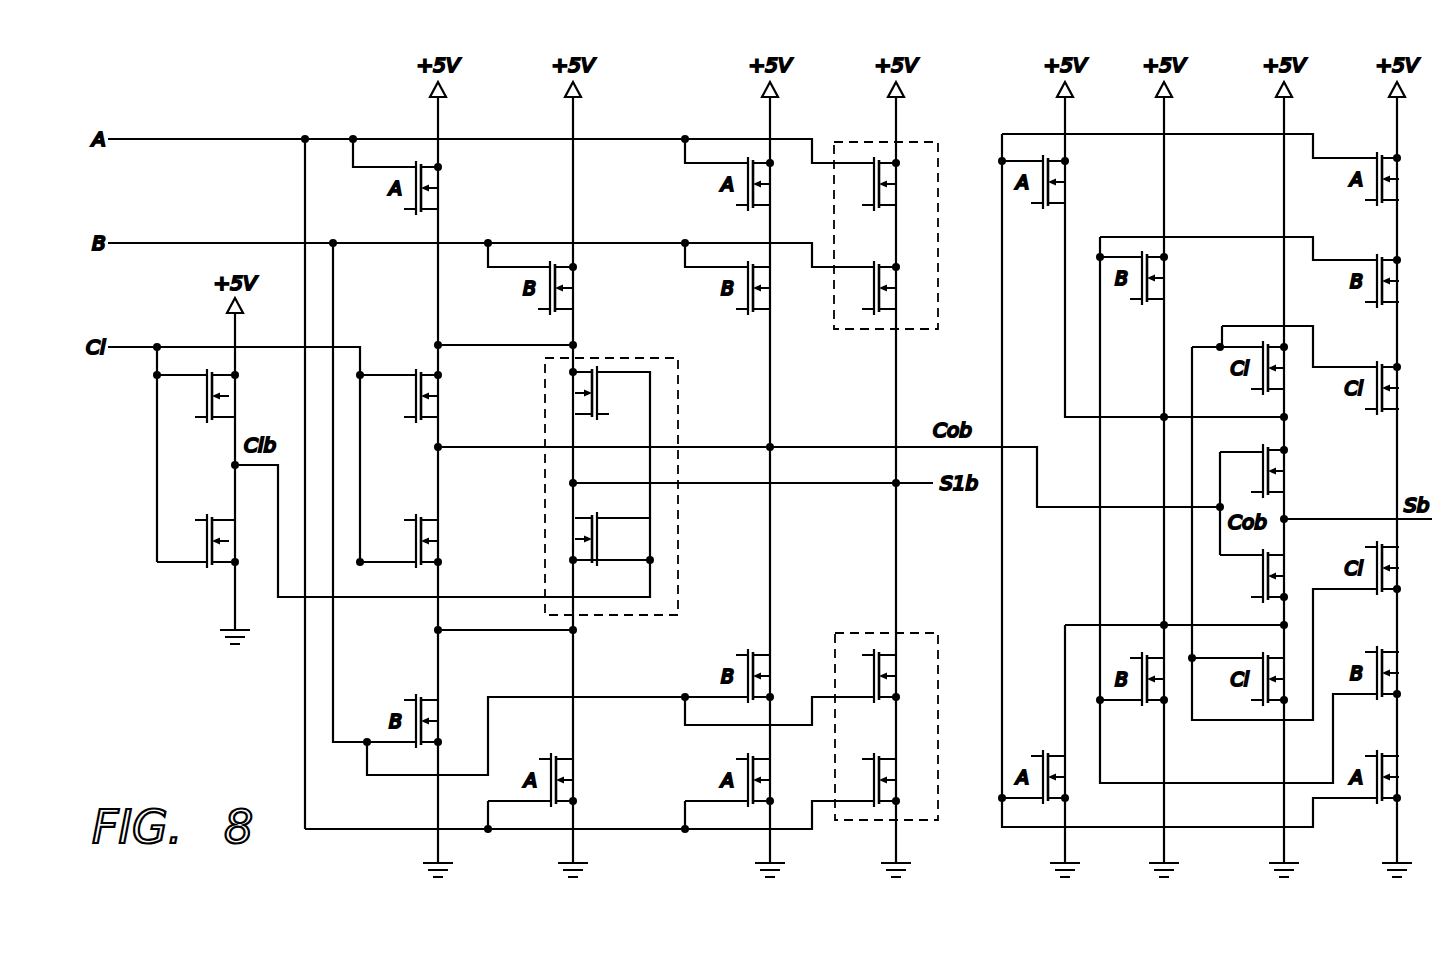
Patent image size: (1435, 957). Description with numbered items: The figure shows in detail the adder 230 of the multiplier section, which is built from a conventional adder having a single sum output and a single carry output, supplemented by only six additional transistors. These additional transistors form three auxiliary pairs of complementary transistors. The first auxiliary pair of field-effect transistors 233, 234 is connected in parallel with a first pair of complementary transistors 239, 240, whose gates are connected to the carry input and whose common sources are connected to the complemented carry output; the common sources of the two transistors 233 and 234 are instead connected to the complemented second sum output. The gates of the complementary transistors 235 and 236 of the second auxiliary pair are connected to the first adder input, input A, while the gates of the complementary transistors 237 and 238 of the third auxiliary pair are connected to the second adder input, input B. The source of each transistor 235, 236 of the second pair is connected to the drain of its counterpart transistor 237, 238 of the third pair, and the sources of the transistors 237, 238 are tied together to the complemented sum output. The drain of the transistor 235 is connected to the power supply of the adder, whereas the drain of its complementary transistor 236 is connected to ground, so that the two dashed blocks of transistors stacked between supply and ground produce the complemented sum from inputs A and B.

The adder 230 is at (940, 139).
The field-effect transistor of first auxiliary pair 233 is at (640, 414).
The field-effect transistor of first auxiliary pair 234 is at (640, 513).
The complementary transistor of second auxiliary pair 235 is at (905, 190).
The complementary transistor of second auxiliary pair 236 is at (918, 781).
The complementary transistor of third auxiliary pair 237 is at (918, 288).
The complementary transistor of third auxiliary pair 238 is at (920, 651).
The complementary transistor of first pair 239 is at (405, 356).
The complementary transistor of first pair 240 is at (404, 577).